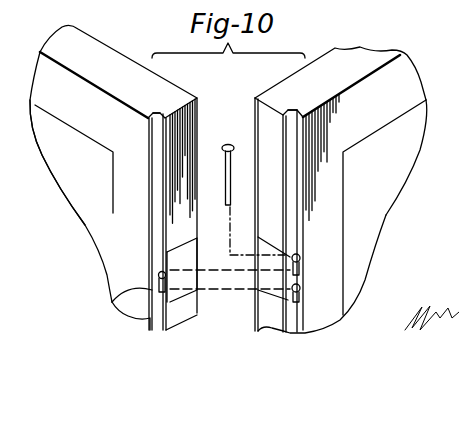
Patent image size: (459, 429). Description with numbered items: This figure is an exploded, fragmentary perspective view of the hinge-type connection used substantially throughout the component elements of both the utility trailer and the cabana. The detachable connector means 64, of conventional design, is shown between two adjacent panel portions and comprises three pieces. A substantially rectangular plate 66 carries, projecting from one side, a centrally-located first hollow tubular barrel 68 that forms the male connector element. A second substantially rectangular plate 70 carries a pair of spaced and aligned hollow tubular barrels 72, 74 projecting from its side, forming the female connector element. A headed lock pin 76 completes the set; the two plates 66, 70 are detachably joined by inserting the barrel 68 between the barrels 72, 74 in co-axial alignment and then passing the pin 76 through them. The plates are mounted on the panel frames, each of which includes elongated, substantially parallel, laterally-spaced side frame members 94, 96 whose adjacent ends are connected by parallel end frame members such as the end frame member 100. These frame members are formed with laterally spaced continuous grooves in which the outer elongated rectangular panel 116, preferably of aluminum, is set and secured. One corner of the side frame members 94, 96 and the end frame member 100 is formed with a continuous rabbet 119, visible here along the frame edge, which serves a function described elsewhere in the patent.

The detachable connector means 64 is at (205, 274).
The substantially rectangular plate 66 is at (178, 262).
The first hollow tubular barrel 68 is at (114, 306).
The second substantially rectangular plate 70 is at (270, 250).
The hollow tubular barrel 72 is at (300, 262).
The hollow tubular barrel 74 is at (314, 287).
The headed lock pin 76 is at (226, 181).
The side frame member 94 is at (118, 210).
The side frame member 96 is at (344, 190).
The end frame member 100 is at (83, 128).
The outer elongated rectangular panel 116 is at (70, 198).
The continuous rabbet 119 is at (290, 135).